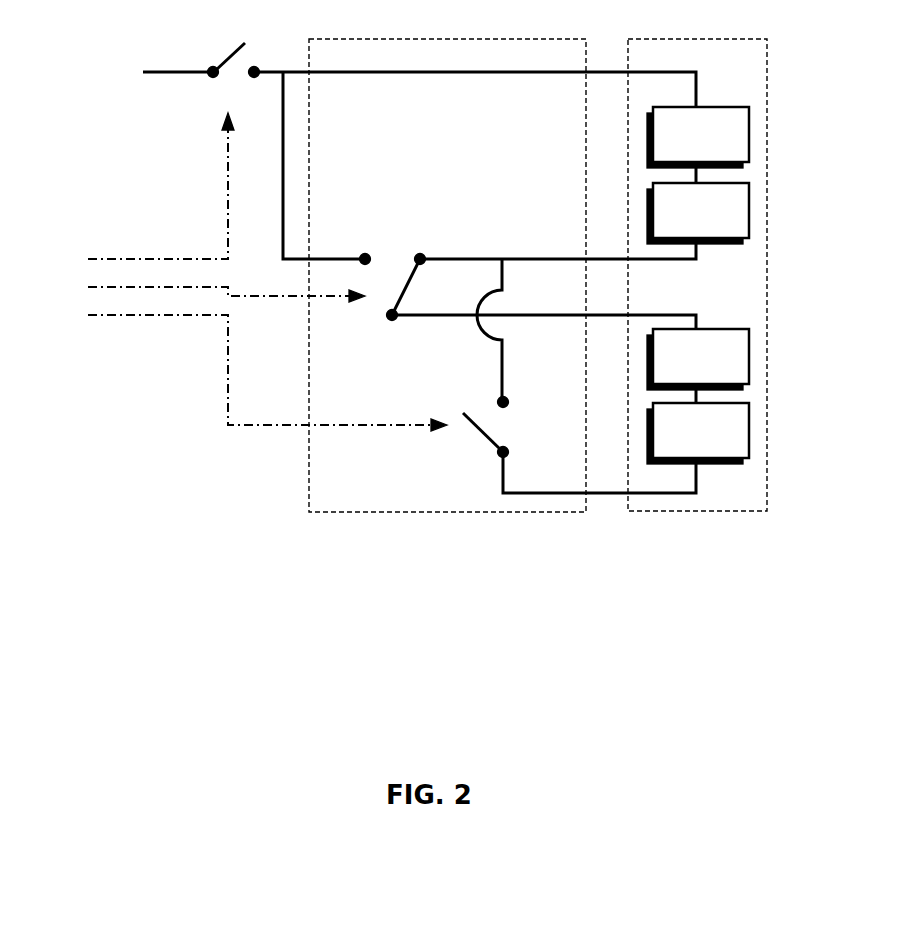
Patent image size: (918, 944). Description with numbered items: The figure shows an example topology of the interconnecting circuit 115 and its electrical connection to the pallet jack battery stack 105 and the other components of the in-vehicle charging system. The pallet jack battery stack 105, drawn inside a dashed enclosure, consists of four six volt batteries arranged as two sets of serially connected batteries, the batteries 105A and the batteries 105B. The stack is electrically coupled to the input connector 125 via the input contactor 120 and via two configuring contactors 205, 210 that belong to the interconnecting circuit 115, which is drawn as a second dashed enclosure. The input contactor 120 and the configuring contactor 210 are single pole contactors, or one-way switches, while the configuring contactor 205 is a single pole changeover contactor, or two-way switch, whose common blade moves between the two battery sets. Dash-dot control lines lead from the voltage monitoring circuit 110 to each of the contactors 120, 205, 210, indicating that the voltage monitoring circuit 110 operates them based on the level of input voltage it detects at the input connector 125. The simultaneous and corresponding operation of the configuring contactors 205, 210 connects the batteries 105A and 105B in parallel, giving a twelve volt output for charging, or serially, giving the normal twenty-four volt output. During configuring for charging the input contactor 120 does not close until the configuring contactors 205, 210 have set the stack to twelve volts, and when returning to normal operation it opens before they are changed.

The pallet jack battery stack 105 is at (735, 513).
The battery 105A is at (777, 110).
The battery 105B is at (777, 331).
The voltage monitoring circuit 110 is at (224, 272).
The interconnecting circuit 115 is at (377, 512).
The input contactor 120 is at (221, 49).
The input connector 125 is at (124, 71).
The configuring contactor 205 is at (393, 266).
The configuring contactor 210 is at (484, 414).